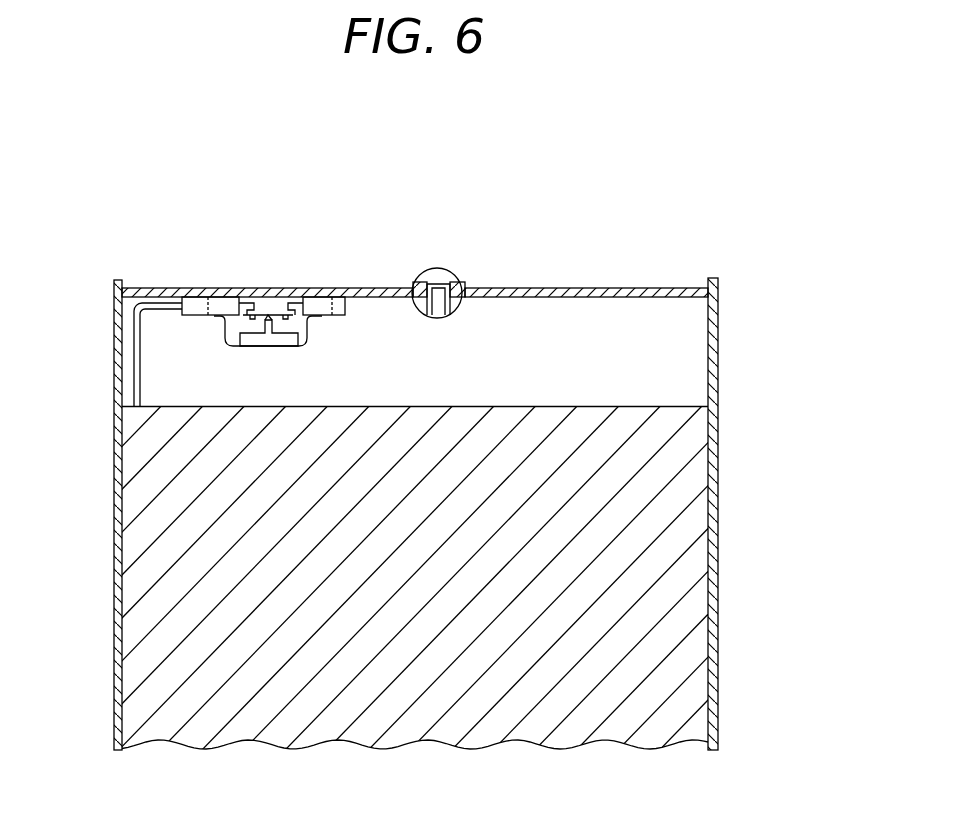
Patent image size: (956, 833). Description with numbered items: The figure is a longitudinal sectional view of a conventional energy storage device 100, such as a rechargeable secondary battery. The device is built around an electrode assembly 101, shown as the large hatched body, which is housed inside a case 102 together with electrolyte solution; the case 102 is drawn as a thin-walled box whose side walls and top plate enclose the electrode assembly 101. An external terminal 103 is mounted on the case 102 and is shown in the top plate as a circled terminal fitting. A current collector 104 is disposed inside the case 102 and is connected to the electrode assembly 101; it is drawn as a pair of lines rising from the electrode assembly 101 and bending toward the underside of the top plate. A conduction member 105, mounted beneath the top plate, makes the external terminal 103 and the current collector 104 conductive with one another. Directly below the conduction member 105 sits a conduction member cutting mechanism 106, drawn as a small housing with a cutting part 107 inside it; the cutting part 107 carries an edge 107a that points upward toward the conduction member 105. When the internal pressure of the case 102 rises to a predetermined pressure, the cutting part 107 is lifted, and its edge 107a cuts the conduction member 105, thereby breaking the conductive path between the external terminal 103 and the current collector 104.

The battery/device assembly 100 is at (652, 227).
The electrode assembly 101 is at (660, 553).
The case 102 is at (718, 438).
The external terminal 103 is at (438, 267).
The current collector 104 is at (135, 333).
The conduction member 105 is at (263, 303).
The conduction member cutting mechanism 106 is at (225, 325).
The cutting part 107 is at (258, 341).
The edge 107a is at (272, 317).